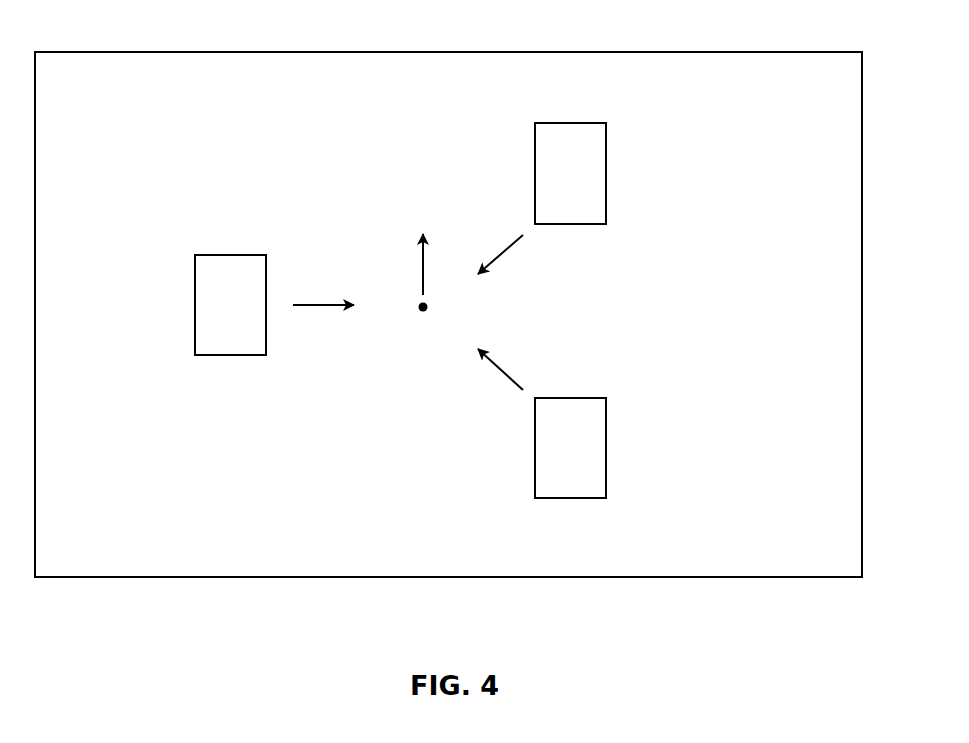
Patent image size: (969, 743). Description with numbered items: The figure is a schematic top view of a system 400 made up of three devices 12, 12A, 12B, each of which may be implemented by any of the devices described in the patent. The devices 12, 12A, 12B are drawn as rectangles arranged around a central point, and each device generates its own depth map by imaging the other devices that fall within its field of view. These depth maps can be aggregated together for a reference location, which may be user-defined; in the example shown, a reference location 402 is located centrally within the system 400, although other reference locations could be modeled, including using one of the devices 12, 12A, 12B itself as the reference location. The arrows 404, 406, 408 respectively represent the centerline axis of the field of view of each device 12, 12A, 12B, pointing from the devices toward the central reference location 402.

The system 400 is at (326, 174).
The device 12 is at (207, 255).
The device 12A is at (606, 145).
The device 12B is at (606, 427).
The reference location 402 is at (421, 312).
The arrow 404 is at (313, 306).
The arrow 406 is at (507, 253).
The arrow 408 is at (500, 372).